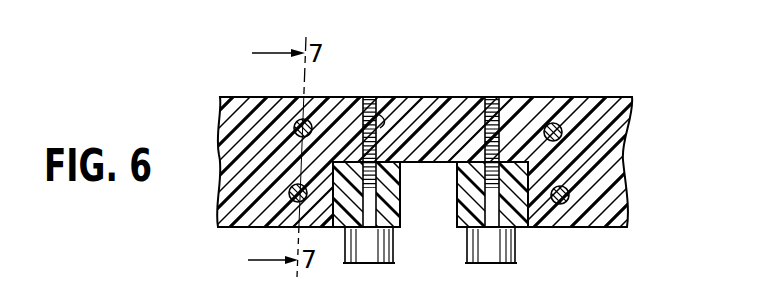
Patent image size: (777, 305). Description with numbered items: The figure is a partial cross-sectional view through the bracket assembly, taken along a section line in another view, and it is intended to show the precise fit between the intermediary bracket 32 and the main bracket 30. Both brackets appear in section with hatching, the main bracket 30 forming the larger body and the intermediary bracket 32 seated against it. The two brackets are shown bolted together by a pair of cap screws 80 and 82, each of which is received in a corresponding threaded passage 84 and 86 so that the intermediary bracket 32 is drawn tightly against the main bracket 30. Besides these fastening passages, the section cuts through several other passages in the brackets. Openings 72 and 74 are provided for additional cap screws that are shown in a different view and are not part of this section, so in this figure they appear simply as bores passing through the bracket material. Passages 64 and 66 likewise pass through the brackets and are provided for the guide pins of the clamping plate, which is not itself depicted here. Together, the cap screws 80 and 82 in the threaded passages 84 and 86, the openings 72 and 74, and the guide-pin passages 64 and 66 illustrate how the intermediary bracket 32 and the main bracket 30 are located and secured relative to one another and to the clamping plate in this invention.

The main bracket 30 is at (614, 180).
The intermediary bracket 32 is at (400, 218).
The passage 64 is at (291, 204).
The passage 66 is at (566, 204).
The opening 72 is at (296, 120).
The opening 74 is at (551, 123).
The cap screw 80 is at (367, 248).
The cap screw 82 is at (488, 252).
The threaded passage 84 is at (388, 97).
The threaded passage 86 is at (491, 97).